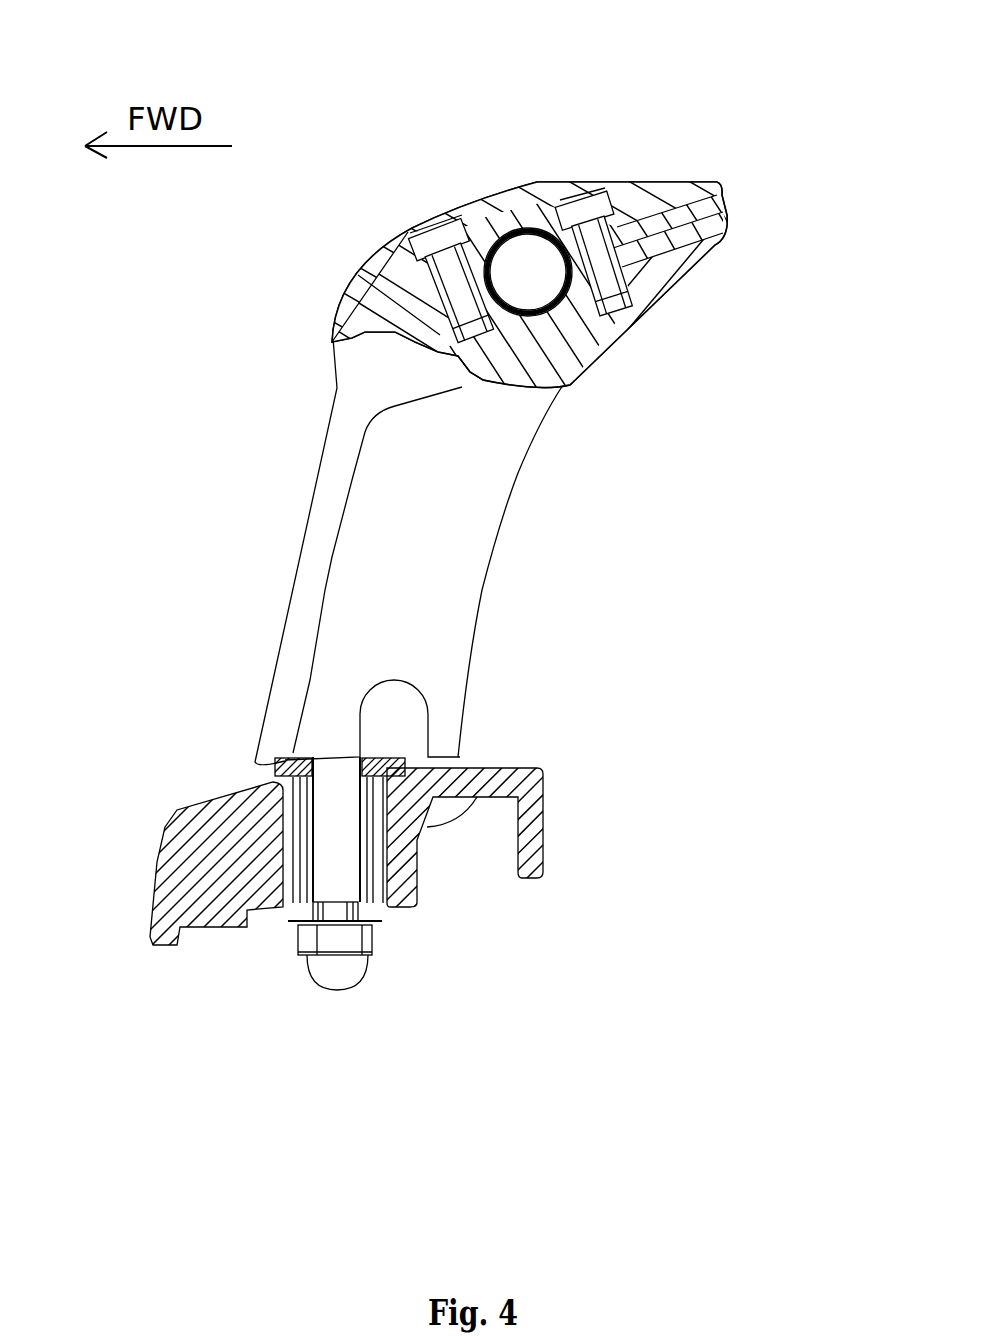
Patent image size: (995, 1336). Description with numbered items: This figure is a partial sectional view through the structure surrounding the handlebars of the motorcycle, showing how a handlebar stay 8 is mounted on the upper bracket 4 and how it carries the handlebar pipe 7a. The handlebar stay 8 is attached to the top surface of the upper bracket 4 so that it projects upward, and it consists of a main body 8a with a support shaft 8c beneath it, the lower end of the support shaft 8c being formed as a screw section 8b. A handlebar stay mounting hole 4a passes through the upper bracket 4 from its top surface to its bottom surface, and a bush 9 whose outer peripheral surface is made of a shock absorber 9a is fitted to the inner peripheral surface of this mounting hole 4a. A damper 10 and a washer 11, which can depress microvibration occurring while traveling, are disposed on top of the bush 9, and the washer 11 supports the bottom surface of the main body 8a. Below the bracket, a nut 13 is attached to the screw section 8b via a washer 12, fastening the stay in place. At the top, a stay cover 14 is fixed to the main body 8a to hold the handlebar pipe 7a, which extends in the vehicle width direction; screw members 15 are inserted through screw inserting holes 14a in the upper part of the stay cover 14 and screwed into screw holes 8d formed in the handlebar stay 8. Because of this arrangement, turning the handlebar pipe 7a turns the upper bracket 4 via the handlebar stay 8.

The upper bracket 4 is at (540, 780).
The handlebar stay mounting hole 4a is at (147, 907).
The handlebar pipe 7a is at (503, 223).
The handlebar stay 8 is at (565, 565).
The main body 8a is at (318, 494).
The screw section 8b is at (380, 920).
The support shaft 8c is at (417, 897).
The screw hole 8d is at (463, 273).
The bush 9 is at (420, 873).
The shock absorber 9a is at (492, 770).
The damper 10 is at (273, 778).
The washer 11 is at (160, 837).
The washer 12 is at (291, 928).
The nut 13 is at (363, 943).
The stay cover 14 is at (630, 183).
The screw inserting hole 14a is at (437, 217).
The screw member 15 is at (445, 210).